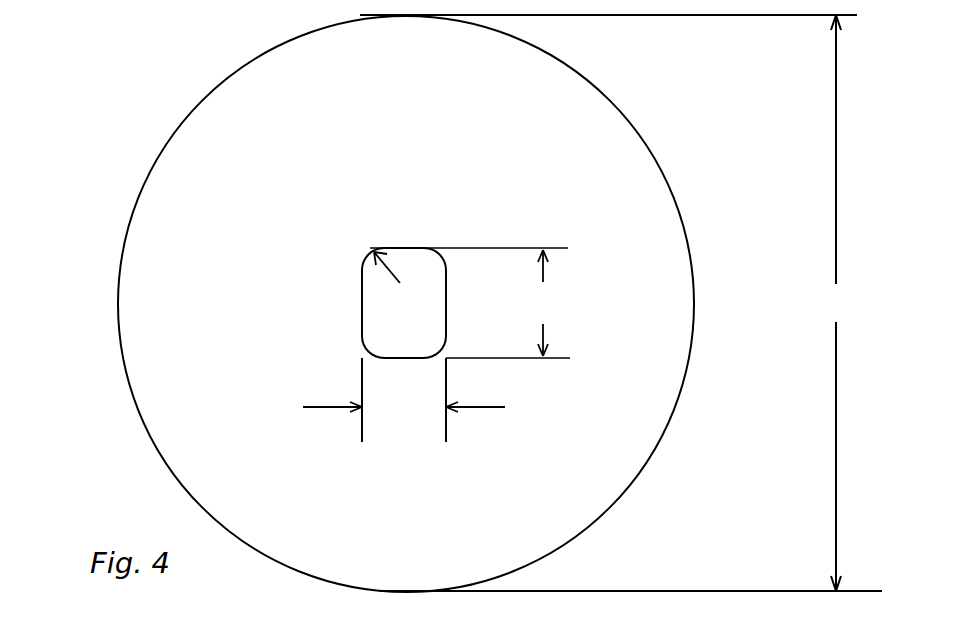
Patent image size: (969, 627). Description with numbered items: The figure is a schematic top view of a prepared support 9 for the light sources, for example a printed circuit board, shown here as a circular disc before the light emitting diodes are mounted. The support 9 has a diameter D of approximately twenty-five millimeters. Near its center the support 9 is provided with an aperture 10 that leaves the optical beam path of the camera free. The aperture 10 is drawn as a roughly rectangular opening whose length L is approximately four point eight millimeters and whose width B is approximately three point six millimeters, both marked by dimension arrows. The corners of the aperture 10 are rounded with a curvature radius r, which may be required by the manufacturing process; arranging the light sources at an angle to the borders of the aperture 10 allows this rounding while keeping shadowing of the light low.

The support 9 is at (190, 162).
The aperture 10 is at (380, 315).
The diameter of the support D is at (621, 303).
The length of the aperture L is at (470, 303).
The width of the aperture B is at (404, 409).
The curvature radius r is at (385, 278).